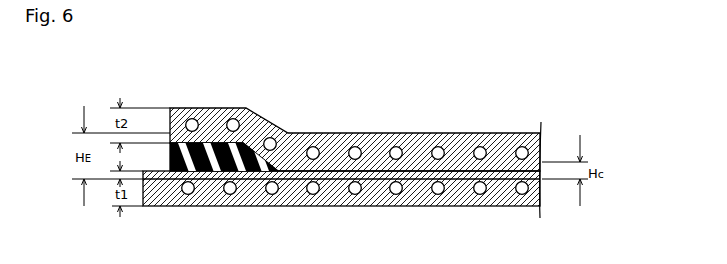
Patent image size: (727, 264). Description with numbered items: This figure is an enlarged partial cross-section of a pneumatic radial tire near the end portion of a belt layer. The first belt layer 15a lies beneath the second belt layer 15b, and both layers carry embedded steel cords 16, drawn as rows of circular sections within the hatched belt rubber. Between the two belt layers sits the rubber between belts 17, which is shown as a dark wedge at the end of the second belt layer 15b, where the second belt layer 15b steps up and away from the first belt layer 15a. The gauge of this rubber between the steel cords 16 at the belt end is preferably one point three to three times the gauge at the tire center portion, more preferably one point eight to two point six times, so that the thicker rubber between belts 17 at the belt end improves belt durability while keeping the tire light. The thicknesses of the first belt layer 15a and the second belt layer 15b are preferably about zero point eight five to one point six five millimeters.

The first belt layer 15a is at (262, 206).
The second belt layer 15b is at (260, 117).
The steel cords 16 is at (355, 146).
The rubber between belts 17 is at (196, 143).